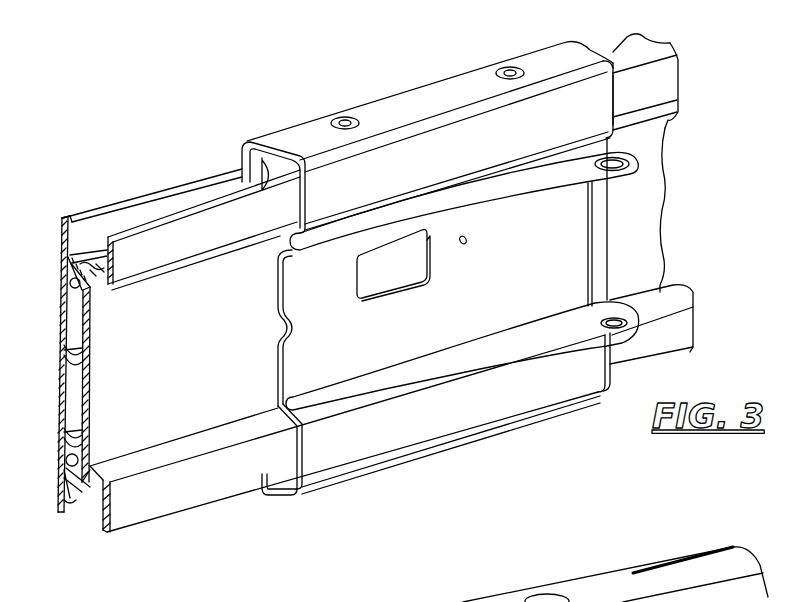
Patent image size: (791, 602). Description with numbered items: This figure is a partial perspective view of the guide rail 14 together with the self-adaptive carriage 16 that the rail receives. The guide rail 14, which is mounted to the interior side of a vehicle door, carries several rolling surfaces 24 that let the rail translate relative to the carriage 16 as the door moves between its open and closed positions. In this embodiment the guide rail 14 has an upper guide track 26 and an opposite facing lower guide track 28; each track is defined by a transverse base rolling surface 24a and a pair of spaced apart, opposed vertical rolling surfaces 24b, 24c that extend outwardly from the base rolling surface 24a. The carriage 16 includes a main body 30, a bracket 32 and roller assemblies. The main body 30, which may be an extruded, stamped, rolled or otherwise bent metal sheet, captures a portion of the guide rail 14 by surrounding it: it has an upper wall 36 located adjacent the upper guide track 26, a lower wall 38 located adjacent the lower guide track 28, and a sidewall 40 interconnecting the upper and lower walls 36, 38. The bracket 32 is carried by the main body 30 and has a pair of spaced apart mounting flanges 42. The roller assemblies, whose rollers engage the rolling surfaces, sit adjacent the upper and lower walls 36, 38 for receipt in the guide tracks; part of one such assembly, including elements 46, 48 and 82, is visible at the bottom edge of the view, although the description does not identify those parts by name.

The guide rail 14 is at (630, 36).
The self-adaptive carriage 16 is at (430, 119).
The rolling surfaces 24 is at (78, 490).
The base rolling surface 24a is at (92, 264).
The vertical rolling surface 24b is at (100, 264).
The vertical rolling surface 24c is at (70, 220).
The upper guide track 26 is at (150, 209).
The lower guide track 28 is at (86, 514).
The main body 30 is at (614, 110).
The bracket 32 is at (560, 247).
The upper wall 36 is at (401, 107).
The lower wall 38 is at (263, 490).
The sidewall 40 is at (242, 160).
The mounting flanges 42 is at (551, 183).
The housing 46 is at (588, 597).
The base 48 is at (411, 601).
The fastener 82 is at (525, 591).